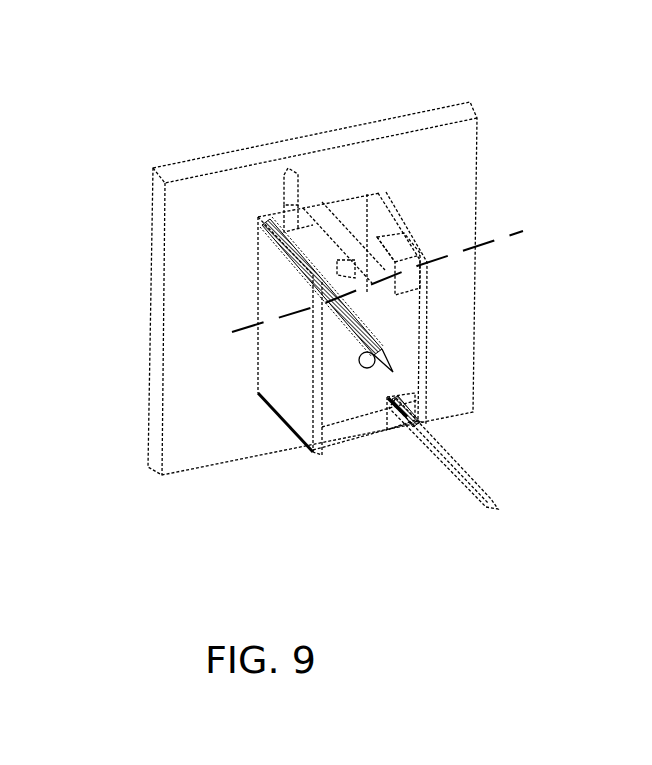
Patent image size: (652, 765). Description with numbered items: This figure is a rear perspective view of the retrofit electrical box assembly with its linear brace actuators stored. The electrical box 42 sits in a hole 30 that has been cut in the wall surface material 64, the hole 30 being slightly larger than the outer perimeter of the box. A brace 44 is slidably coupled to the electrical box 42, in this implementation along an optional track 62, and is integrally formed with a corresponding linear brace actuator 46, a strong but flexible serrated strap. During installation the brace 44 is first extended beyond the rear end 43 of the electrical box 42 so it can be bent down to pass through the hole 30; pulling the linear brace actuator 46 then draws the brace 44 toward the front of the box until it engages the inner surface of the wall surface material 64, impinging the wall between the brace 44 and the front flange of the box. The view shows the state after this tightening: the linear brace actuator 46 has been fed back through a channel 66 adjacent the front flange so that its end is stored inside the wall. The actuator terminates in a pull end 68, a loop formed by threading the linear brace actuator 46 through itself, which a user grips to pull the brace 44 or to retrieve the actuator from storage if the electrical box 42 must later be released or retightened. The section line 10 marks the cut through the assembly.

The section line 10 is at (232, 332).
The hole 30 is at (380, 195).
The electrical box 42 is at (440, 315).
The rear end 43 is at (357, 405).
The brace 44 is at (296, 192).
The linear brace actuator 46 is at (397, 428).
The track 62 is at (330, 237).
The wall surface material 64 is at (458, 143).
The channel 66 is at (265, 250).
The pull end 68 is at (499, 487).